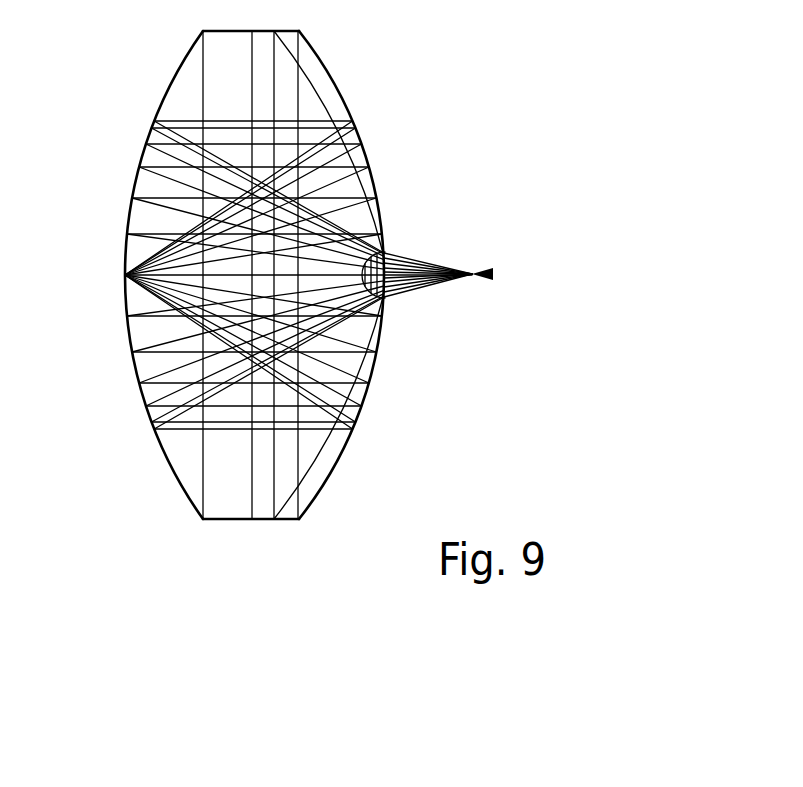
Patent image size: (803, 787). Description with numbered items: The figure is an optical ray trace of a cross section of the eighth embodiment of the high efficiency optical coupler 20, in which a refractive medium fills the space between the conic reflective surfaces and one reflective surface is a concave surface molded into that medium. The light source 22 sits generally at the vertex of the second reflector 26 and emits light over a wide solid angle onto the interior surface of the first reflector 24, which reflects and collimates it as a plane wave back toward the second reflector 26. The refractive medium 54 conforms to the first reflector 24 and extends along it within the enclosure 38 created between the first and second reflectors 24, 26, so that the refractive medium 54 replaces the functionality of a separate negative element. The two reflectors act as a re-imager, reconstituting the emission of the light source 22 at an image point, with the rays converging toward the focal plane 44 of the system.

The high efficiency optical coupler 20 is at (560, 88).
The light source 22 is at (125, 275).
The first reflector 24 is at (322, 483).
The second reflector 26 is at (178, 480).
The enclosure 38 is at (242, 64).
The focal plane 44 is at (472, 275).
The refractive medium 54 is at (323, 92).